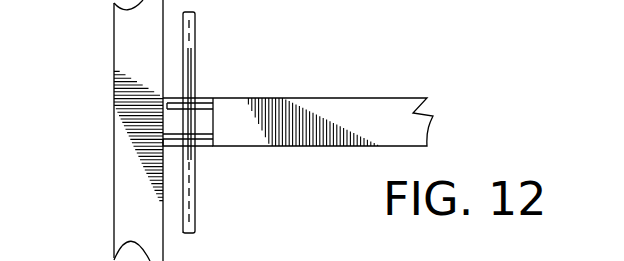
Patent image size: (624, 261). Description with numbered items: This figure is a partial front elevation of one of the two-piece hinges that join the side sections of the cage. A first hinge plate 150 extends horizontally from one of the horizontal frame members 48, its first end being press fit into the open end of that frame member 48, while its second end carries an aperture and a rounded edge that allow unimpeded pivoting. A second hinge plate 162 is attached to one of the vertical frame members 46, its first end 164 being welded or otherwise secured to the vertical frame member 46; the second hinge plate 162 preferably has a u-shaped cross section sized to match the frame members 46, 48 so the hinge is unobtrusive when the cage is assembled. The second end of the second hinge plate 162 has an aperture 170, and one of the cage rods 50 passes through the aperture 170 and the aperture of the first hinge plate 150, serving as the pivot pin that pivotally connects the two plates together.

The vertical frame member 46 is at (132, 67).
The horizontal frame member 48 is at (362, 108).
The cage rod 50 is at (188, 185).
The first hinge plate 150 is at (204, 104).
The second hinge plate 162 is at (183, 147).
The first end of the second hinge plate 164 is at (157, 137).
The aperture 170 is at (196, 50).